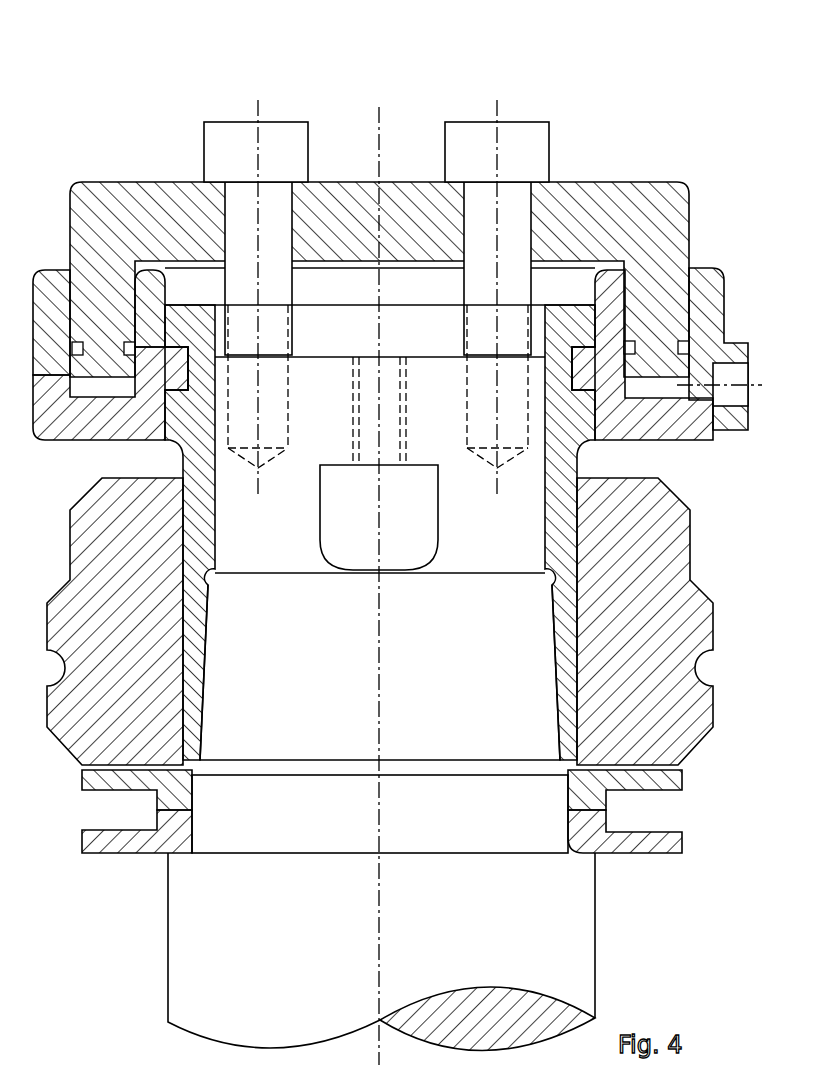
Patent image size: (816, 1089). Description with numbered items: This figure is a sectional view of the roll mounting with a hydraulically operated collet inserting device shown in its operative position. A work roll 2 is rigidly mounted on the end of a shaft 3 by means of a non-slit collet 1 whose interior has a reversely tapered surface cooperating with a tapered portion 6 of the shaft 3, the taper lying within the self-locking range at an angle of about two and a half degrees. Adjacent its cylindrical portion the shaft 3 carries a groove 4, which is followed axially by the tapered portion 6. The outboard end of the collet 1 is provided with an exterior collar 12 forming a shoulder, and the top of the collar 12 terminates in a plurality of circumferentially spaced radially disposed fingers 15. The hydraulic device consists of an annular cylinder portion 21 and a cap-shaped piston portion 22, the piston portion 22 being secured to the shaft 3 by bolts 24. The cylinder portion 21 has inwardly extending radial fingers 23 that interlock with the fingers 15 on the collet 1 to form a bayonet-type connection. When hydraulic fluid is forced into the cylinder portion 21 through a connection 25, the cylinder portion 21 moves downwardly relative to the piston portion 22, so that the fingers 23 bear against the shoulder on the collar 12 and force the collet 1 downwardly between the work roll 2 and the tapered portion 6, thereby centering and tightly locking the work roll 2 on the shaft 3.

The collet 1 is at (557, 459).
The work roll 2 is at (645, 522).
The shaft 3 is at (207, 915).
The groove 4 is at (510, 822).
The tapered portion 6 is at (398, 720).
The collar 12 is at (575, 412).
The fingers 15 is at (579, 322).
The cylinder portion 21 is at (41, 268).
The piston portion 22 is at (650, 215).
The radial fingers 23 is at (588, 360).
The bolts 24 is at (206, 130).
The connection 25 is at (728, 377).